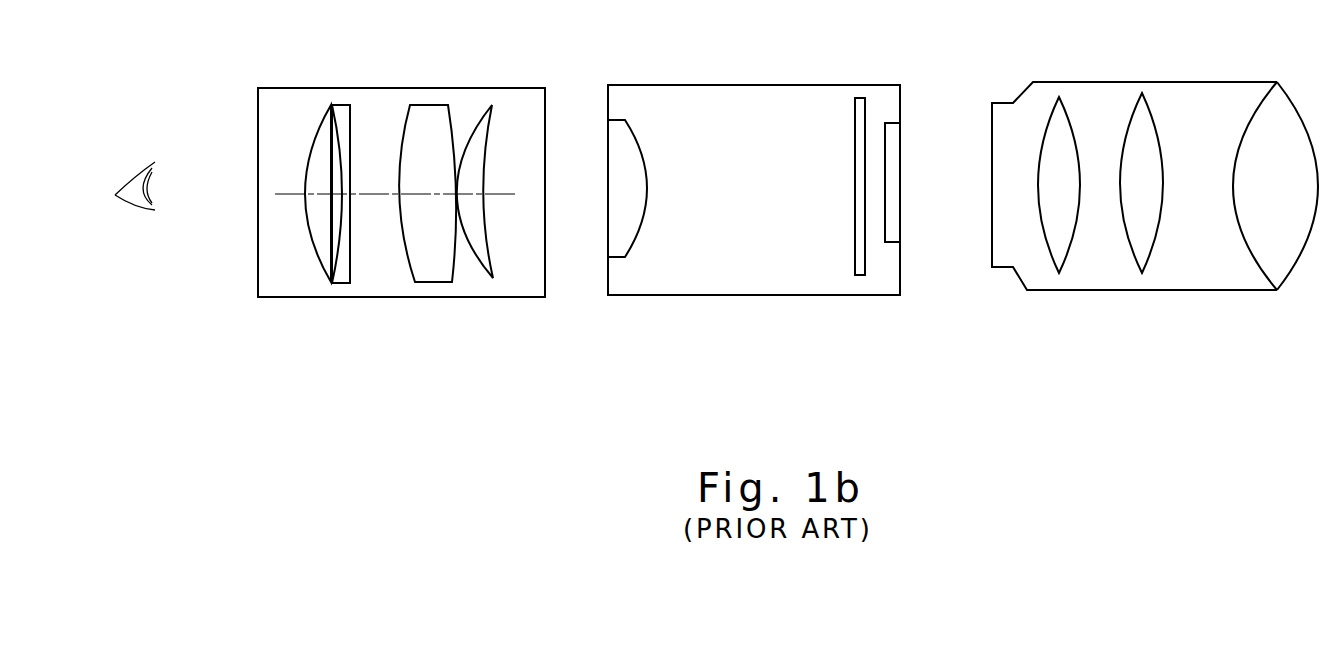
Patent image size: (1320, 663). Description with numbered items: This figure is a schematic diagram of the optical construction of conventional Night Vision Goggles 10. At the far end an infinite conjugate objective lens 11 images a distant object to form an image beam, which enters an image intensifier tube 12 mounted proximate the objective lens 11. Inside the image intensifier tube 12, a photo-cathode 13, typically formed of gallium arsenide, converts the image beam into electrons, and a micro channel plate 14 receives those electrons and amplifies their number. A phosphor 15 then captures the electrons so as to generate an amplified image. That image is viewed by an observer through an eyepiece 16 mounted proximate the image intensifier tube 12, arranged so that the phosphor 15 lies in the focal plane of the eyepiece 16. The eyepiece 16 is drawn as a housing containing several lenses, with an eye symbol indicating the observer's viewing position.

The Night Vision Goggles 10 is at (748, 219).
The infinite conjugate objective lens 11 is at (1178, 80).
The image intensifier tube 12 is at (778, 295).
The photo-cathode 13 is at (902, 202).
The micro channel plate 14 is at (855, 98).
The phosphor 15 is at (622, 180).
The eyepiece 16 is at (453, 58).